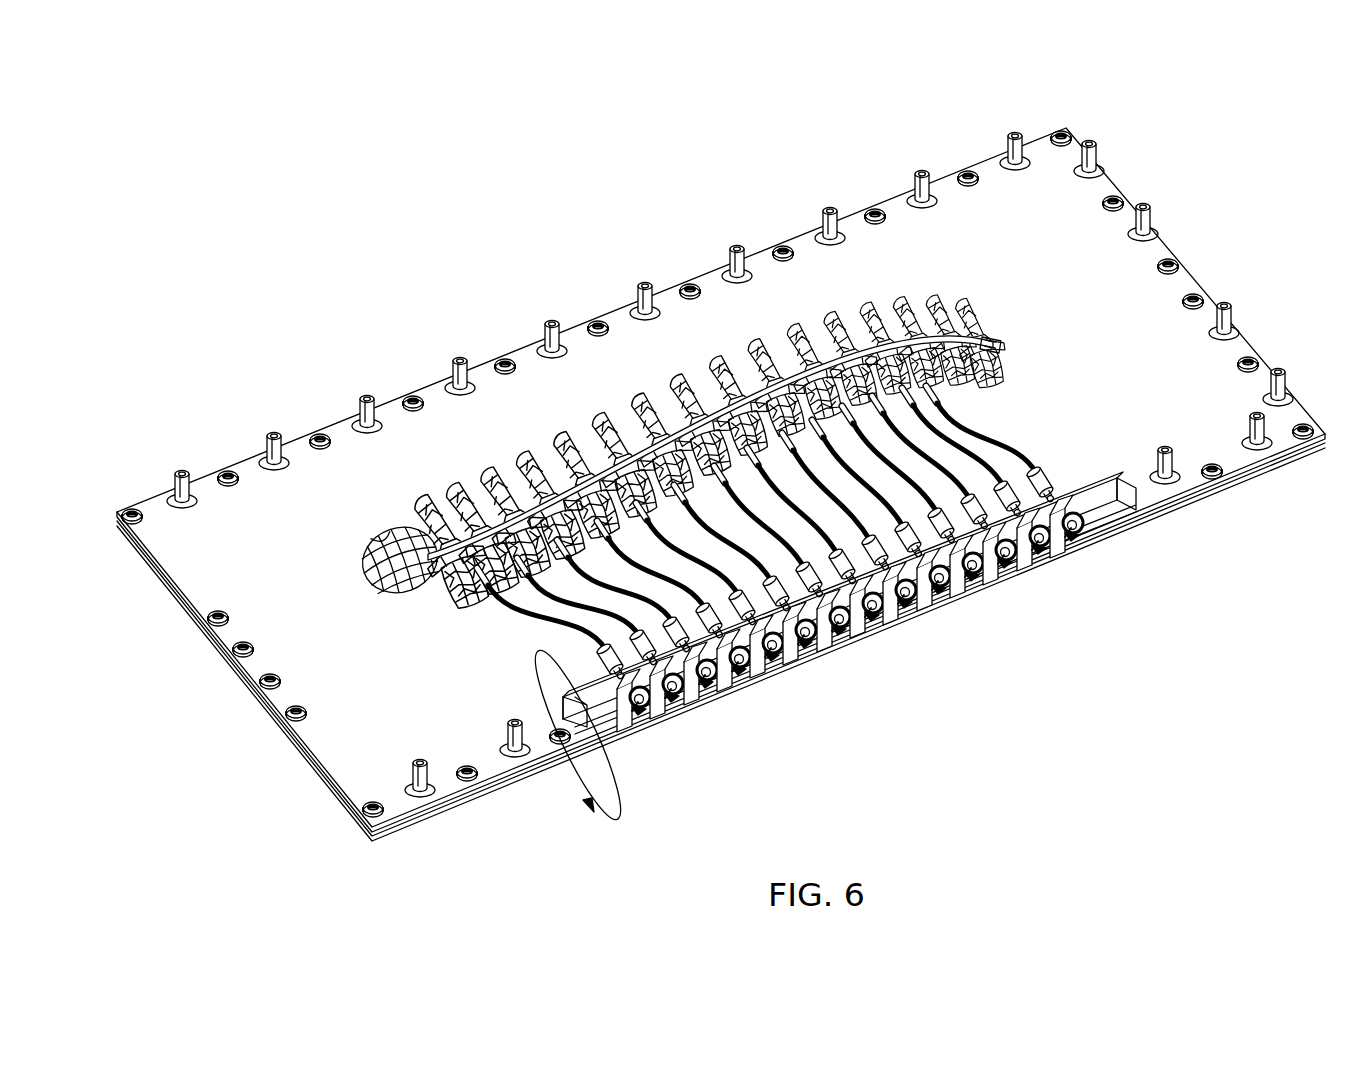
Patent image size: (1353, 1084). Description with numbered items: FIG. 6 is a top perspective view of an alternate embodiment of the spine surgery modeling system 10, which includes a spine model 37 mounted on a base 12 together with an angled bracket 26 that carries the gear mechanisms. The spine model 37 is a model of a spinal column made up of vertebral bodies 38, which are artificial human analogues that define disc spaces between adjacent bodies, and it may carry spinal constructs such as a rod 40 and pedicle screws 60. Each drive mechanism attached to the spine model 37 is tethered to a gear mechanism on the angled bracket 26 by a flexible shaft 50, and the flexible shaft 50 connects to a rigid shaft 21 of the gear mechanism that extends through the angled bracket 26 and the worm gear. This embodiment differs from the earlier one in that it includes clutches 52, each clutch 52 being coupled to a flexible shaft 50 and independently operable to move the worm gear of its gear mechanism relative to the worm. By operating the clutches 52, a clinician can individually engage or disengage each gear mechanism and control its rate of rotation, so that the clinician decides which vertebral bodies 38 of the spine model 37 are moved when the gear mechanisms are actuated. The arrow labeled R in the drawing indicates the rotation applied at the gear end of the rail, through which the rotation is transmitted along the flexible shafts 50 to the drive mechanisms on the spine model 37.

The spine surgery modeling system 10 is at (672, 252).
The base 12 is at (165, 598).
The rigid shaft 21 is at (795, 665).
The angled bracket 26 is at (1118, 490).
The spine model 37 is at (800, 325).
The vertebral bodies 38 is at (378, 518).
The rod 40 is at (990, 345).
The flexible shaft 50 is at (512, 612).
The clutch 52 is at (1045, 488).
The pedicle screws 60 is at (470, 482).
The rotation direction R is at (577, 735).